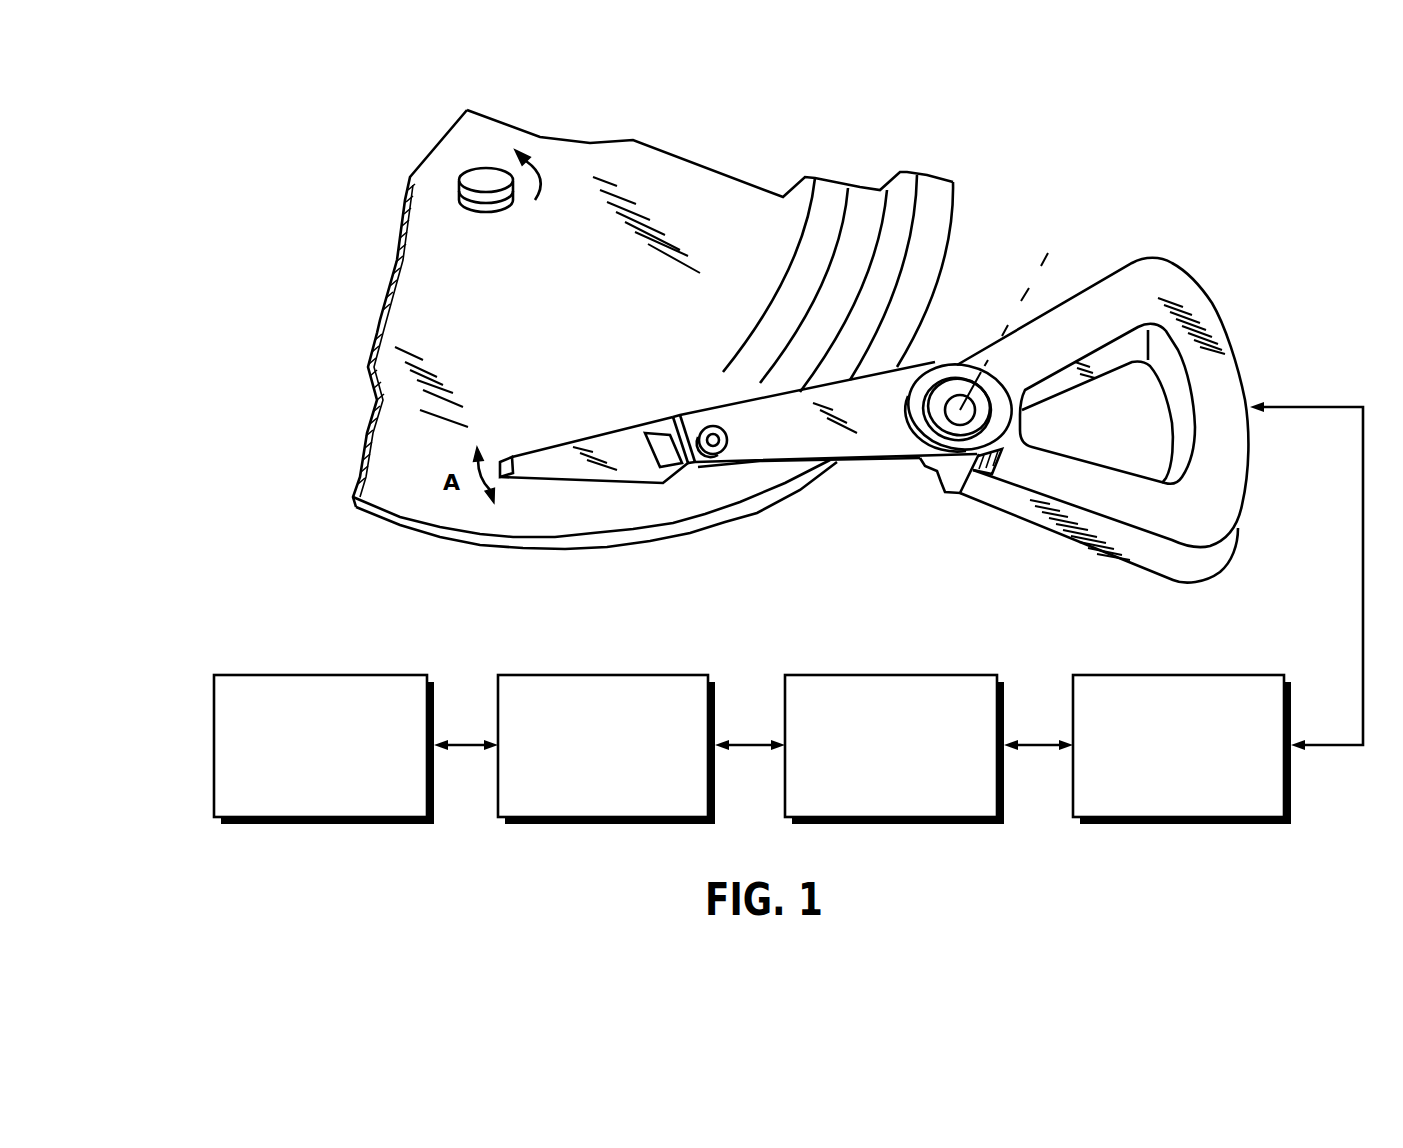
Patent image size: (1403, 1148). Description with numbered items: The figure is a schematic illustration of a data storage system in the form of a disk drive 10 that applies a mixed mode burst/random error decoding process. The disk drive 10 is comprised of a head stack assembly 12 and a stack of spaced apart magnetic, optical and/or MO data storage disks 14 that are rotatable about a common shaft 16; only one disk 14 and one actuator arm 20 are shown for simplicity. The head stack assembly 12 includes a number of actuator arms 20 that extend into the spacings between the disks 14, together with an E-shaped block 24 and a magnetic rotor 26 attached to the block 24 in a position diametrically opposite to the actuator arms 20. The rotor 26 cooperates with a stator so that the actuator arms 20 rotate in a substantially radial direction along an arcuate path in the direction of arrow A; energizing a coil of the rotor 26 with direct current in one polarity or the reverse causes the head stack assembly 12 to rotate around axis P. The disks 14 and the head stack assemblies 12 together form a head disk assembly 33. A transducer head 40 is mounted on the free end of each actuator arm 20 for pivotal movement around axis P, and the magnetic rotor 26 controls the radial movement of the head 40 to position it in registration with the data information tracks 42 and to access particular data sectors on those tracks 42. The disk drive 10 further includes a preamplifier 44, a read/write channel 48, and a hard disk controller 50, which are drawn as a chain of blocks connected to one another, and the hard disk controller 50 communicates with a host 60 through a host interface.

The disk drive 10 is at (1026, 153).
The head stack assembly 12 is at (847, 477).
The data storage disks 14 is at (709, 156).
The common shaft 16 is at (473, 177).
The actuator arms 20 is at (867, 447).
The E-shaped block 24 is at (947, 480).
The magnetic rotor 26 is at (1210, 557).
The head disk assembly 33 is at (1173, 251).
The transducer head 40 is at (497, 480).
The data information tracks 42 is at (917, 193).
The preamplifier 44 is at (1137, 664).
The read/write channel 48 is at (860, 664).
The hard disk controller 50 is at (575, 664).
The host 60 is at (285, 664).